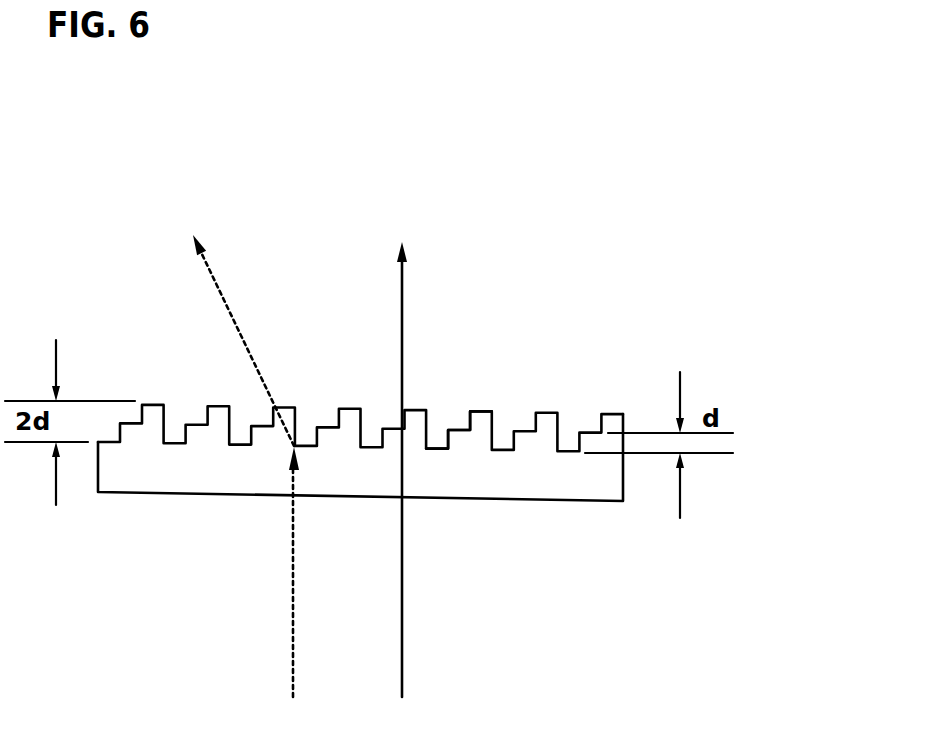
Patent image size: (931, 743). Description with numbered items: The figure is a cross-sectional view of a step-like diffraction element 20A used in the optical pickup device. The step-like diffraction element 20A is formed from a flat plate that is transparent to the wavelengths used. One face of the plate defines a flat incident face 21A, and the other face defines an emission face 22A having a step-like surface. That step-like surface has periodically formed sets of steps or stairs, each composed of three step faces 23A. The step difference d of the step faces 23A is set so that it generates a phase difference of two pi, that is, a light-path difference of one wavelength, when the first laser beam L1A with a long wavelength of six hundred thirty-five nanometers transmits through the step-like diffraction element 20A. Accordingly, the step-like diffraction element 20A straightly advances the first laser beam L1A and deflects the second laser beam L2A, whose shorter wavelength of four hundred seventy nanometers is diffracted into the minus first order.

The step-like diffraction element 20A is at (457, 370).
The flat incident face 21A is at (440, 498).
The emission face 22A is at (553, 260).
The step faces 23A is at (438, 446).
The first laser beam L1A is at (413, 320).
The second laser beam L2A is at (210, 298).